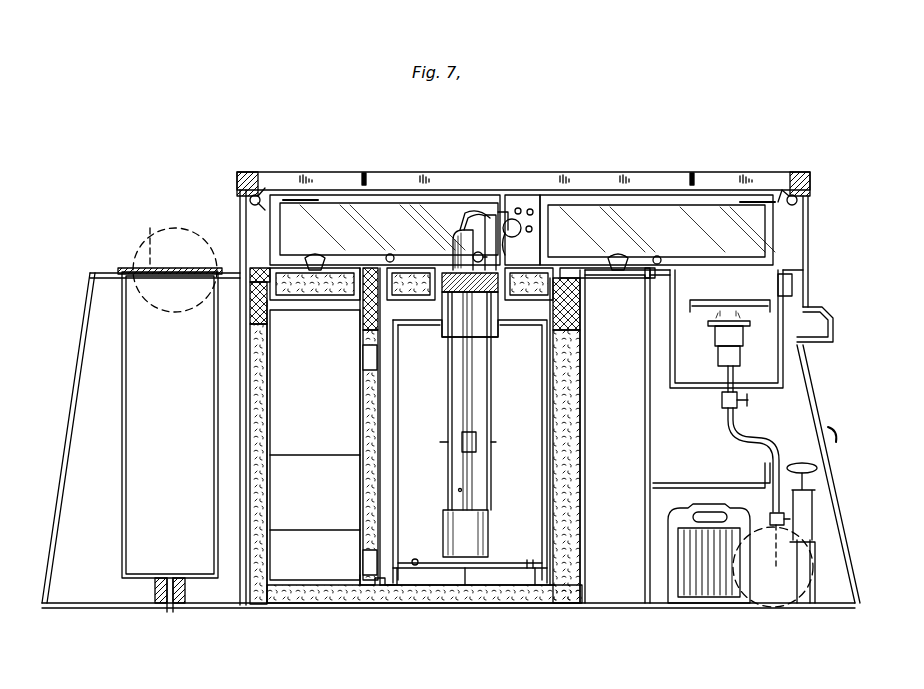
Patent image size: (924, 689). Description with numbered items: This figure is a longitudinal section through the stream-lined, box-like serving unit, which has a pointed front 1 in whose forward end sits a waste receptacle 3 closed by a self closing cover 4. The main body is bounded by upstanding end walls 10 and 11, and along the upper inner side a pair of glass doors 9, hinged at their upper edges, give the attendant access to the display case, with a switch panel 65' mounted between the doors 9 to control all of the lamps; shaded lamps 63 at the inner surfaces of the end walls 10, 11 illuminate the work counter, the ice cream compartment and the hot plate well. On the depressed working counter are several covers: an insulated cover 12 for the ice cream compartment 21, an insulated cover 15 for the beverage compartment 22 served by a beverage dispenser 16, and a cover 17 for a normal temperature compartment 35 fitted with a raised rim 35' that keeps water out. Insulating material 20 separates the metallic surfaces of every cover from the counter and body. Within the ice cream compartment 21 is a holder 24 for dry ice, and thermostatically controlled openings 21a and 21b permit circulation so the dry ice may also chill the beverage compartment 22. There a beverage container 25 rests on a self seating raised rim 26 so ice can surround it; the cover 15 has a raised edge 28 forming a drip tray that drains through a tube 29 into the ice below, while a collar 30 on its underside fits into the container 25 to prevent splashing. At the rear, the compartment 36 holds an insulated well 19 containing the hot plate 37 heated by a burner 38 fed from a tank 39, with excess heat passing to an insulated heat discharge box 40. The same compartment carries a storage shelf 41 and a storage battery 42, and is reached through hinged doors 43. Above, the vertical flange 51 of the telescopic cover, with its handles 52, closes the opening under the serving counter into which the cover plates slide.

The pointed front 1 is at (60, 440).
The waste receptacle 3 is at (128, 400).
The self closing cover 4 is at (150, 228).
The hinged doors 9 is at (320, 210).
The end wall 10 is at (254, 174).
The end wall 11 is at (800, 173).
The cover 12 is at (262, 270).
The cover 15 is at (412, 268).
The beverage dispenser 16 is at (515, 205).
The cover 17 is at (624, 262).
The well 19 is at (730, 293).
The insulating material 20 is at (282, 270).
The ice cream compartment 21 is at (290, 437).
The thermostatically controlled opening 21a is at (362, 560).
The thermostatically controlled opening 21b is at (362, 370).
The beverage compartment 22 is at (588, 410).
The holder for dry ice 24 is at (290, 592).
The beverage container 25 is at (425, 575).
The self seating raised rim 26 is at (537, 575).
The raised edge 28 is at (555, 270).
The tube 29 is at (362, 343).
The collar 30 is at (440, 333).
The normal temperature compartment 35 is at (627, 436).
The raised rim 35' is at (629, 299).
The rear compartment 36 is at (730, 452).
The hot plate 37 is at (748, 300).
The burner 38 is at (737, 330).
The tank 39 is at (788, 528).
The insulated heat discharge box 40 is at (838, 326).
The storage shelf 41 is at (692, 483).
The storage battery 42 is at (700, 592).
The hinged doors 43 is at (832, 400).
The vertical flange 51 is at (760, 182).
The handles 52 is at (370, 180).
The shaded lamps 63 is at (262, 191).
The switch panel 65' is at (545, 201).